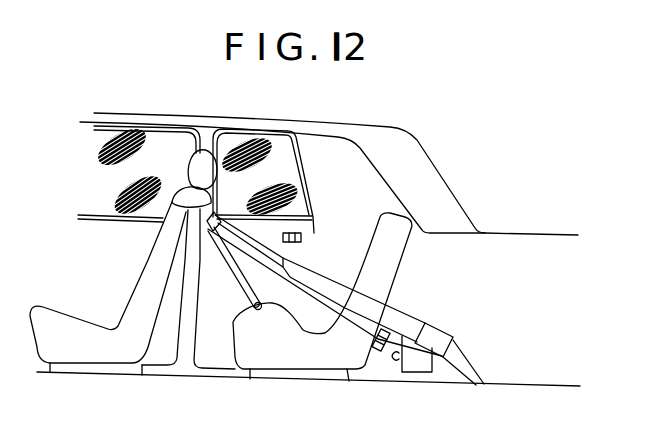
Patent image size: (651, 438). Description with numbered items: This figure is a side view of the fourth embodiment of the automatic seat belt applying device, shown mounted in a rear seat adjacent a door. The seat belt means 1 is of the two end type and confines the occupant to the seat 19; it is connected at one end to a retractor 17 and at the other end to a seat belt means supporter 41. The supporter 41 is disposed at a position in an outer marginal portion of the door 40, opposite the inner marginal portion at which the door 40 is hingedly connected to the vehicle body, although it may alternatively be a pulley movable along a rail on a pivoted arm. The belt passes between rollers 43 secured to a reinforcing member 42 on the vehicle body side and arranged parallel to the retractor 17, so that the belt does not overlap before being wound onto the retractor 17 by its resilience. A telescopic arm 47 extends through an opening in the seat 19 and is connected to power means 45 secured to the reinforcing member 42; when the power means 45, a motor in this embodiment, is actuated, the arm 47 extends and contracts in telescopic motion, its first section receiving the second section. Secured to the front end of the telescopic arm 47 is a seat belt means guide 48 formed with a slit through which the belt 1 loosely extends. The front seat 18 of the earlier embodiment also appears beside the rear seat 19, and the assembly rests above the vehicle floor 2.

The seat belt means 1 is at (232, 237).
The vehicle floor 2 is at (230, 378).
The retractor 17 is at (395, 360).
The seat 18 is at (80, 328).
The seat 19 is at (303, 352).
The door 40 is at (313, 232).
The seat belt means supporter 41 is at (254, 308).
The reinforcing member 42 is at (467, 376).
The rollers 43 is at (380, 347).
The power means 45 is at (440, 335).
The telescopic arm 47 is at (343, 264).
The seat belt means guide 48 is at (205, 222).